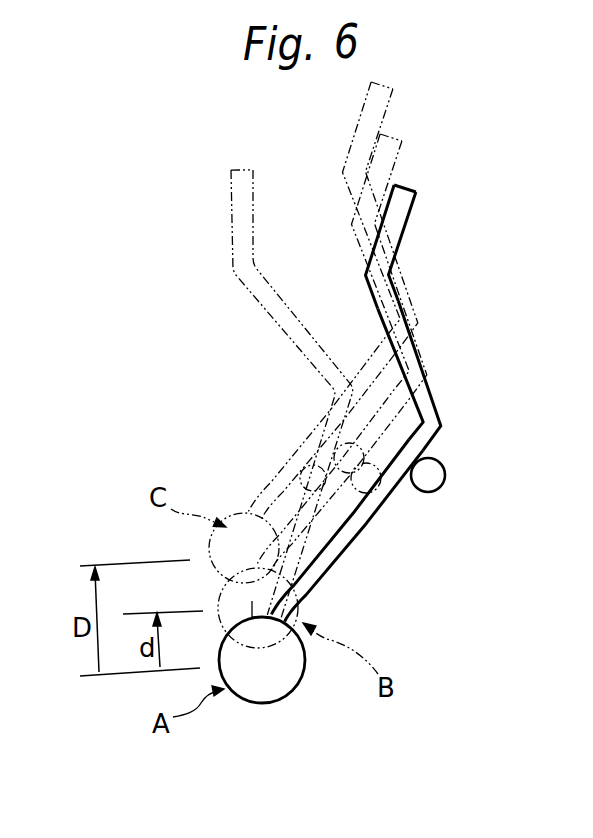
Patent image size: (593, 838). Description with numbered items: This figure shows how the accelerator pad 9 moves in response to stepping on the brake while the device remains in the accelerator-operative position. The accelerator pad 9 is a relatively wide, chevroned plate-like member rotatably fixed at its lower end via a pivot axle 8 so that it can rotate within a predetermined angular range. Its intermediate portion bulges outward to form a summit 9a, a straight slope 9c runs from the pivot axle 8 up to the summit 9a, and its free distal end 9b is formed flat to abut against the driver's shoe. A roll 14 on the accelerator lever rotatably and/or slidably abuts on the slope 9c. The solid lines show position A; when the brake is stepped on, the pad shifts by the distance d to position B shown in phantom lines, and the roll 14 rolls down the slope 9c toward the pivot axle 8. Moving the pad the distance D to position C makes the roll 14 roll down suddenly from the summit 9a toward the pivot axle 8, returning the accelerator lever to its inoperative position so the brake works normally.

The pivot axle 8 is at (283, 687).
The accelerator pad 9 is at (334, 533).
The summit 9a is at (421, 364).
The free distal end 9b is at (388, 103).
The slope 9c is at (384, 506).
The roll 14 is at (384, 483).